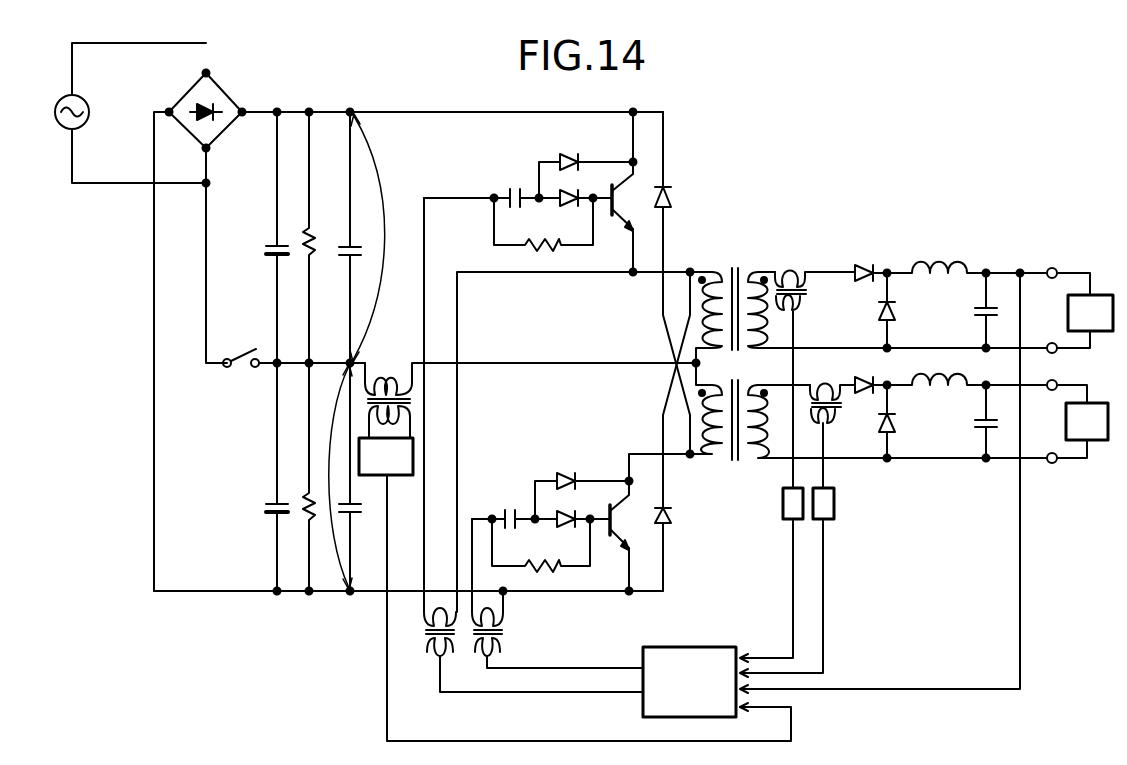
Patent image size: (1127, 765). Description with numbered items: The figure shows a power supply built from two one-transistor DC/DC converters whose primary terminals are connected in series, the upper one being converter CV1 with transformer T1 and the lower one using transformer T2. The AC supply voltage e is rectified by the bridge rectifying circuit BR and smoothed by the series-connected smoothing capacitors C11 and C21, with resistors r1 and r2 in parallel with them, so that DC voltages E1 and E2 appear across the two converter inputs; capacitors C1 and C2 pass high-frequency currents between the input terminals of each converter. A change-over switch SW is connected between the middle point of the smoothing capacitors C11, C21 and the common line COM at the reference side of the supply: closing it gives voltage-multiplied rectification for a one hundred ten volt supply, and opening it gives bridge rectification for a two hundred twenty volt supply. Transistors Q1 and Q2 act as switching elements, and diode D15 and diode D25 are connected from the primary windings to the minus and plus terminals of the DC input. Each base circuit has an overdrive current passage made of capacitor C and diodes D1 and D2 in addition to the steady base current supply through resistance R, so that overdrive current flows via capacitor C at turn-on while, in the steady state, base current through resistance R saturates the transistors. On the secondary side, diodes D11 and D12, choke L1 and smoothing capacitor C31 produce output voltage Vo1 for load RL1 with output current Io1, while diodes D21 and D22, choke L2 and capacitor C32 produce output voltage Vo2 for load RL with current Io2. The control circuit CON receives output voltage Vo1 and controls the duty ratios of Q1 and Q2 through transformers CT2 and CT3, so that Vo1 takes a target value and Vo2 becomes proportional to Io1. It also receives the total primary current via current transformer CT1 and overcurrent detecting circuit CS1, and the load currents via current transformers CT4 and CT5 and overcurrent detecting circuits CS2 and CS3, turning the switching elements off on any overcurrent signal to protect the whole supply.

The AC supply voltage e is at (118, 47).
The bridge rectifying circuit BR is at (217, 96).
The common line COM is at (190, 351).
The change-over switch SW is at (241, 370).
The smoothing capacitor C11 is at (262, 237).
The smoothing capacitor C21 is at (259, 477).
The resistor r1 is at (317, 237).
The resistor r2 is at (317, 477).
The capacitor C1 is at (361, 237).
The capacitor C2 is at (362, 477).
The DC input voltage of first converter E1 is at (376, 238).
The DC input voltage of second converter E2 is at (336, 477).
The current transformer CT1 is at (530, 391).
The overcurrent detecting circuit CS1 is at (575, 589).
The capacitor C is at (481, 347).
The diode D1 is at (573, 372).
The diode D2 is at (584, 323).
The resistance R is at (542, 385).
The transistor Q1 is at (629, 192).
The transistor Q2 is at (650, 522).
The diode D25 is at (680, 283).
The diode D15 is at (680, 431).
The transformer CT2 is at (514, 650).
The transformer CT3 is at (557, 638).
The transformer T1 is at (868, 305).
The transformer T2 is at (868, 408).
The converter CV1 is at (738, 255).
The current transformer CT4 is at (815, 380).
The current transformer CT5 is at (838, 436).
The overcurrent detecting circuit CS2 is at (792, 506).
The overcurrent detecting circuit CS3 is at (824, 506).
The diode D11 is at (865, 260).
The diode D12 is at (905, 310).
The choke L1 is at (967, 256).
The smoothing capacitor C31 is at (969, 310).
The output current Io1 is at (970, 260).
The output voltage Vo1 is at (1050, 288).
The load RL1 is at (1080, 310).
The diode D21 is at (865, 372).
The diode D22 is at (905, 421).
The choke L2 is at (967, 368).
The smoothing capacitor C32 is at (969, 421).
The output current Io2 is at (970, 373).
The output voltage Vo2 is at (1050, 400).
The load RL is at (1077, 421).
The control circuit CON is at (689, 682).